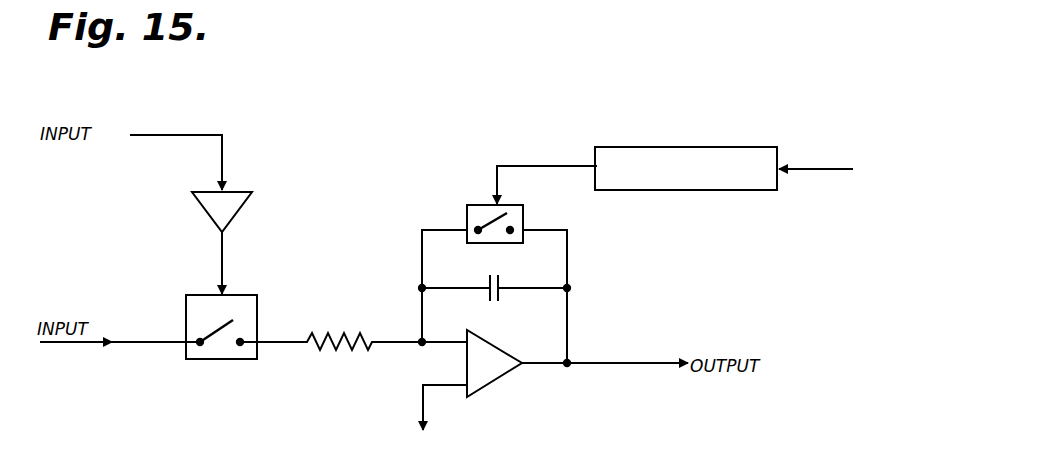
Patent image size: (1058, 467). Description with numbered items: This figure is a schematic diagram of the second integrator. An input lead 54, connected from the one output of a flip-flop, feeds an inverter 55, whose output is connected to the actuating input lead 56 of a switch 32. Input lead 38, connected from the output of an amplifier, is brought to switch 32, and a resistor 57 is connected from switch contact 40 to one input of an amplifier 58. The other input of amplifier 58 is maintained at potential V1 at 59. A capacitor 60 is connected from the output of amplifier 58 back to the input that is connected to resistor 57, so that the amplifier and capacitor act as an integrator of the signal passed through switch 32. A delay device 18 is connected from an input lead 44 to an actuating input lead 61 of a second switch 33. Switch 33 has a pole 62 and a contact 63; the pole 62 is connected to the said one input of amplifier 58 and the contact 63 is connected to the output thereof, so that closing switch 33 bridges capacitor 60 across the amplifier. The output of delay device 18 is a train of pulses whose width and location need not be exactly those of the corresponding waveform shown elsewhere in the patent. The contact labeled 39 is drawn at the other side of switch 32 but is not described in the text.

The delay device 18 is at (668, 147).
The switch 32 is at (228, 362).
The switch 33 is at (525, 212).
The input lead 38 is at (146, 346).
The switch blade contact 39 is at (208, 336).
The switch contact 40 is at (245, 338).
The input lead 44 is at (803, 169).
The input lead 54 is at (224, 157).
The inverter 55 is at (240, 210).
The actuating input lead 56 is at (224, 262).
The resistor 57 is at (328, 334).
The amplifier 58 is at (495, 378).
The potential V1 input 59 is at (443, 388).
The capacitor 60 is at (499, 298).
The actuating input lead 61 is at (543, 165).
The pole 62 is at (489, 220).
The contact 63 is at (510, 235).